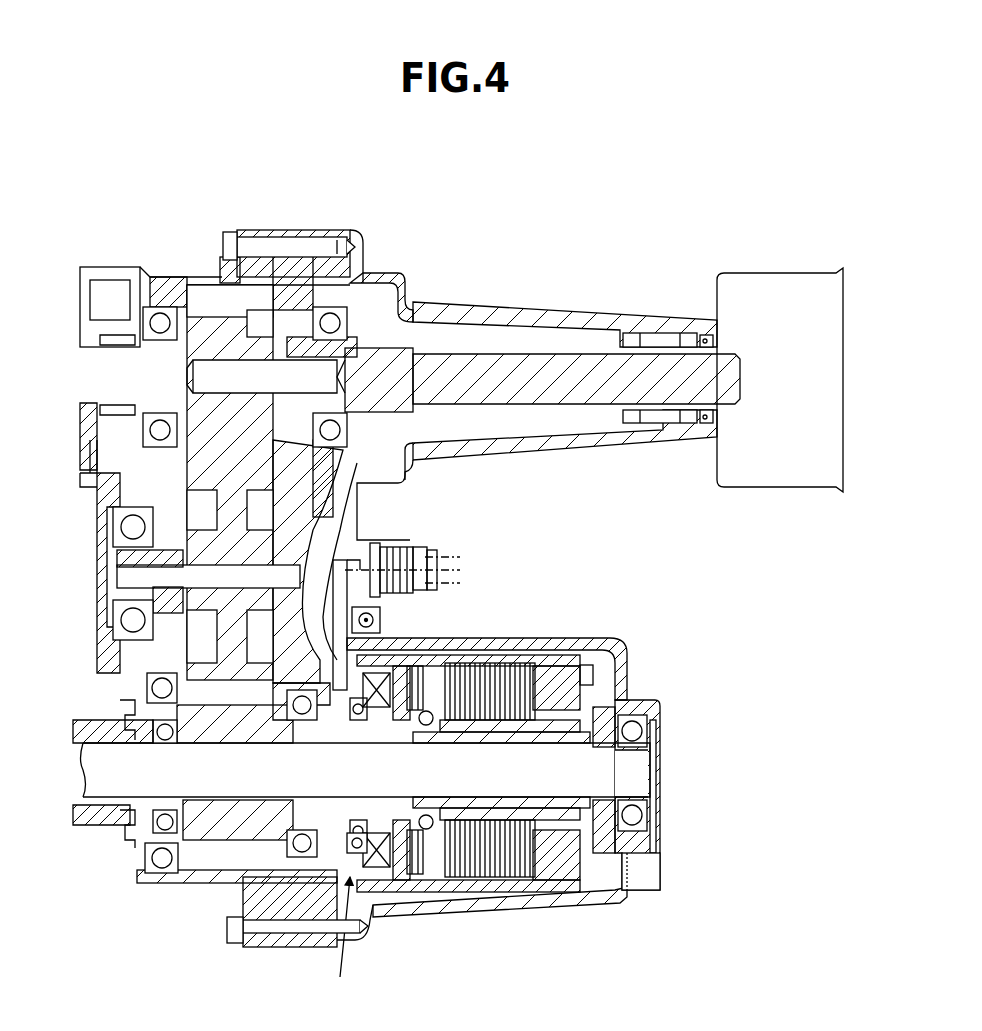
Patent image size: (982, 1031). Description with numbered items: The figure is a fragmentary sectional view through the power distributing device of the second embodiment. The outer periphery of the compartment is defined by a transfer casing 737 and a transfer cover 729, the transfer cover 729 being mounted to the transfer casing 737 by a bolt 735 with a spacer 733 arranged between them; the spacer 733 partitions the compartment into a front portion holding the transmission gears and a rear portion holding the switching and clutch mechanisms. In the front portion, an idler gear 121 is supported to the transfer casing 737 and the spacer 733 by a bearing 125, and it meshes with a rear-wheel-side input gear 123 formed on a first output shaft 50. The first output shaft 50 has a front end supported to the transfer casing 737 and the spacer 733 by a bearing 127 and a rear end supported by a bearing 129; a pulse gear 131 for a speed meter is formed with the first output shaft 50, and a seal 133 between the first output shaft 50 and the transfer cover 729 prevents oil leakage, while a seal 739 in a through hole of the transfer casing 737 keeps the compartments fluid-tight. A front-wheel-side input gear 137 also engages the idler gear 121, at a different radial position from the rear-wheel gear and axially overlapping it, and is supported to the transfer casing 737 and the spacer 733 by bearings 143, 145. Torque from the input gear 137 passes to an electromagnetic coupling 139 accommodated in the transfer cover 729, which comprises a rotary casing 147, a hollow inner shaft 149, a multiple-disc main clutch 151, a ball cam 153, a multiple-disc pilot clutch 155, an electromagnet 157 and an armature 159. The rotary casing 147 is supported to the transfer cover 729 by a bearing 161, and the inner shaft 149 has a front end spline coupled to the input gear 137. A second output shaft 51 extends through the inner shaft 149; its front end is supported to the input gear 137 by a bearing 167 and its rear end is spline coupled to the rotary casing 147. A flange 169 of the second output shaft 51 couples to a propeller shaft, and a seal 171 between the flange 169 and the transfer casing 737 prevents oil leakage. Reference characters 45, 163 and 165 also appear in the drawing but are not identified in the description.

The electric motor 45 is at (525, 758).
The first output shaft 50 is at (547, 393).
The second output shaft 51 is at (333, 790).
The idler gear 121 is at (237, 463).
The rear-wheel-side input gear 123 is at (200, 290).
The bearing 125 is at (135, 530).
The bearing 127 is at (160, 327).
The bearing 129 is at (680, 345).
The pulse gear 131 is at (407, 343).
The seal 133 is at (705, 335).
The front-wheel-side input gear 137 is at (223, 683).
The electromagnetic coupling 139 is at (590, 628).
The bearing 143 is at (147, 680).
The bearing 145 is at (300, 717).
The rotary casing 147 is at (622, 660).
The hollow inner shaft 149 is at (515, 753).
The multiple-disc main clutch 151 is at (527, 650).
The ball cam 153 is at (425, 747).
The multiple-disc pilot clutch 155 is at (418, 655).
The electromagnet 157 is at (332, 938).
The armature 159 is at (423, 673).
The bearing 161 is at (657, 728).
The bracket 163 is at (343, 603).
The connector 165 is at (445, 540).
The bearing 167 is at (170, 740).
The flange 169 is at (90, 720).
The seal 171 is at (140, 737).
The transfer cover 729 is at (413, 917).
The spacer 733 is at (288, 245).
The bolt 735 is at (228, 232).
The transfer casing 737 is at (120, 265).
The seal 739 is at (130, 345).